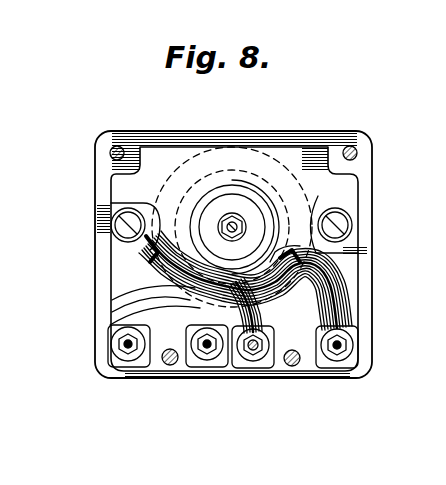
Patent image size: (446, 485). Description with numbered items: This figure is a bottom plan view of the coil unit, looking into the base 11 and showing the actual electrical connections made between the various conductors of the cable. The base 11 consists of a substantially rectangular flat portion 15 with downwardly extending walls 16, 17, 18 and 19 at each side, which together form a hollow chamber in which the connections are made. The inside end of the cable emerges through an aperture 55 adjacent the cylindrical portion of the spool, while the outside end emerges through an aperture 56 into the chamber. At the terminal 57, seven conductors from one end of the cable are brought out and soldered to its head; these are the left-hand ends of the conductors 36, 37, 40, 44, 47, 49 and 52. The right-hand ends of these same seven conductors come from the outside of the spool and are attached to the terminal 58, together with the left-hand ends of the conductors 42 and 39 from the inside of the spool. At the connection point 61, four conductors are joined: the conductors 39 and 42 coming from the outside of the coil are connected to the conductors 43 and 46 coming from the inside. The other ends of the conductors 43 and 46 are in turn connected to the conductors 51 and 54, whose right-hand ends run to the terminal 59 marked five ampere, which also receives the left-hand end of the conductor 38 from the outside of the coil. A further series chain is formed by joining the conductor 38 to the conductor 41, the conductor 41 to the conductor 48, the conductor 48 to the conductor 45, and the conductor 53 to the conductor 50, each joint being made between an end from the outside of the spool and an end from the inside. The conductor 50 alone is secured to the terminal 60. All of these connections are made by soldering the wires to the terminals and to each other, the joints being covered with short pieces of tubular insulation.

The base 11 is at (171, 131).
The flat portion 15 is at (297, 152).
The wall 16 is at (272, 378).
The wall 17 is at (241, 142).
The wall 18 is at (372, 201).
The wall 19 is at (101, 181).
The conductor 36 is at (398, 276).
The conductor 37 is at (342, 288).
The conductor 38 is at (185, 292).
The conductor 39 is at (297, 313).
The conductor 40 is at (343, 297).
The conductor 41 is at (166, 272).
The conductor 42 is at (297, 300).
The conductor 43 is at (232, 227).
The conductor 44 is at (344, 305).
The conductor 45 is at (124, 318).
The conductor 46 is at (316, 266).
The conductor 47 is at (345, 312).
The conductor 48 is at (108, 258).
The conductor 49 is at (346, 320).
The conductor 50 is at (118, 350).
The conductor 51 is at (156, 392).
The conductor 52 is at (326, 368).
The conductor 53 is at (103, 243).
The conductor 54 is at (280, 215).
The aperture 55 is at (304, 212).
The aperture 56 is at (157, 214).
The terminal 57 is at (356, 362).
The terminal 58 is at (252, 367).
The terminal 59 is at (206, 366).
The terminal 60 is at (130, 356).
The connection point 61 is at (235, 237).